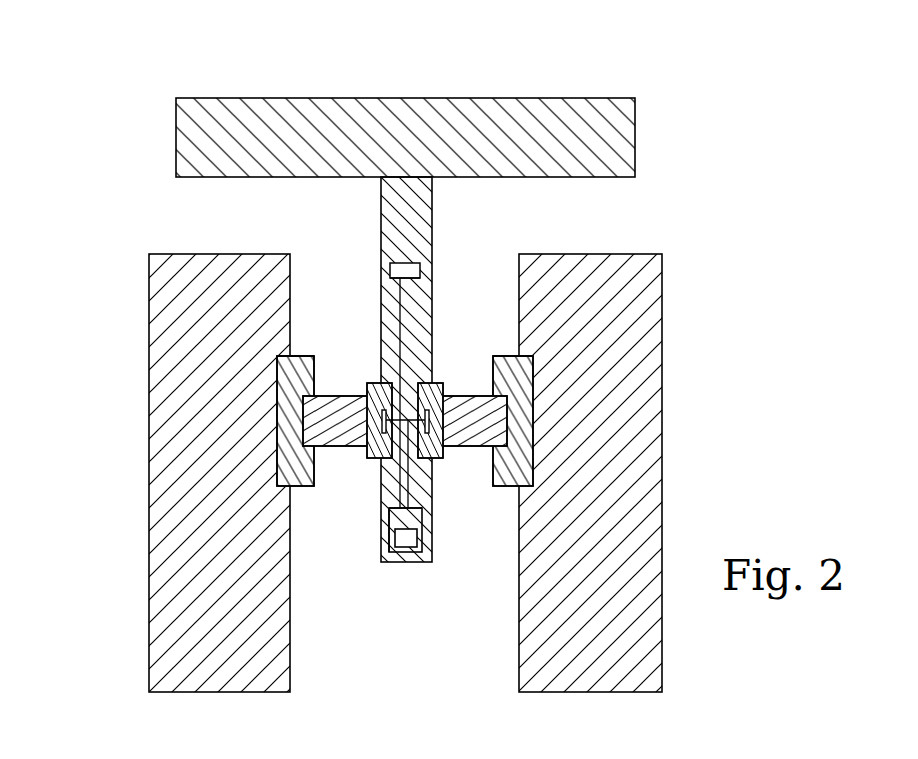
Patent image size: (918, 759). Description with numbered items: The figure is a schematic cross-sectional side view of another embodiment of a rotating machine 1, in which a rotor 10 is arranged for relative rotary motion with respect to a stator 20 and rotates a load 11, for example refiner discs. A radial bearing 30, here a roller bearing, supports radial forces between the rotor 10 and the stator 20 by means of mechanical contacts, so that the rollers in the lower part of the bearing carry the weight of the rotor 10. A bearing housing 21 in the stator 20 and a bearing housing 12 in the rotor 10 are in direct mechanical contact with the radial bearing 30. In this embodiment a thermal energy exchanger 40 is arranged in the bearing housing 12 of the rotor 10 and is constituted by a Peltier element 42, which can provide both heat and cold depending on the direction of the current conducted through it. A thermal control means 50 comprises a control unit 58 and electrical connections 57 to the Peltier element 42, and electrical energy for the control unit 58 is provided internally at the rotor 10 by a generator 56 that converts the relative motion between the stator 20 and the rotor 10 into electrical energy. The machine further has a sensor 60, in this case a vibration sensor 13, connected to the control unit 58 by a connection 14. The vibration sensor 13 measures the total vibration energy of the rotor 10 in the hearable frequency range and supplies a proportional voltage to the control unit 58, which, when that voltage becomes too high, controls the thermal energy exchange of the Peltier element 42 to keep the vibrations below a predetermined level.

The rotating machine 1 is at (733, 66).
The rotor 10 is at (393, 234).
The load 11 is at (190, 146).
The bearing housing 12 is at (371, 383).
The vibration sensor 13 is at (422, 263).
The connection 14 is at (398, 288).
The stator 20 is at (162, 292).
The bearing housing 21 is at (333, 360).
The radial bearing 30 is at (324, 455).
The thermal energy exchanger 40 is at (400, 485).
The Peltier element 42 is at (383, 420).
The thermal control means 50 is at (428, 515).
The generator 56 is at (410, 545).
The electrical connections 57 is at (394, 519).
The control unit 58 is at (391, 528).
The sensor 60 is at (392, 264).